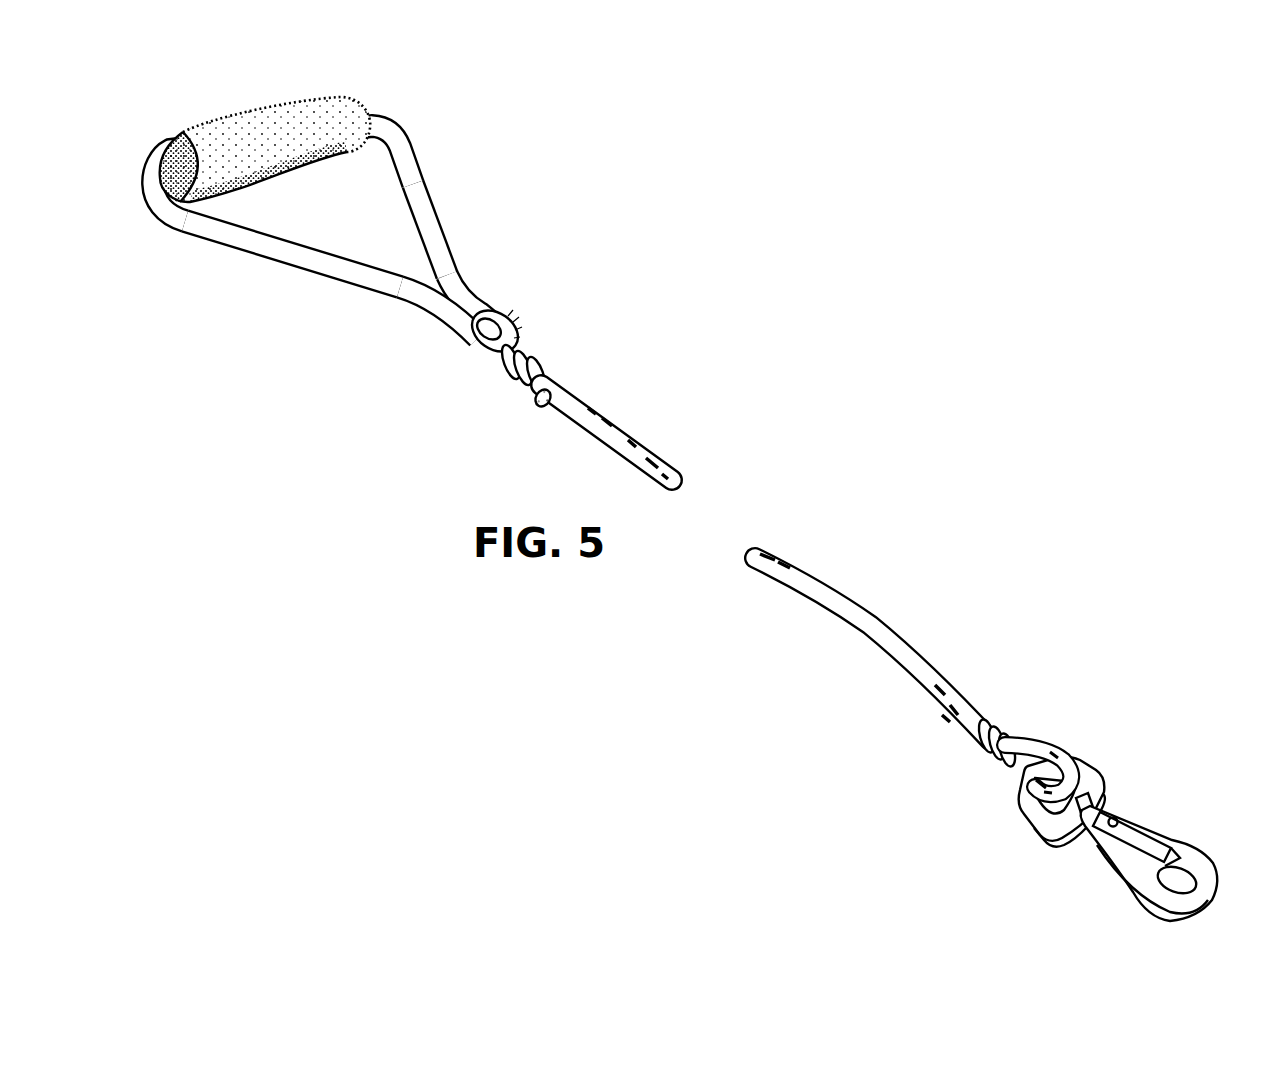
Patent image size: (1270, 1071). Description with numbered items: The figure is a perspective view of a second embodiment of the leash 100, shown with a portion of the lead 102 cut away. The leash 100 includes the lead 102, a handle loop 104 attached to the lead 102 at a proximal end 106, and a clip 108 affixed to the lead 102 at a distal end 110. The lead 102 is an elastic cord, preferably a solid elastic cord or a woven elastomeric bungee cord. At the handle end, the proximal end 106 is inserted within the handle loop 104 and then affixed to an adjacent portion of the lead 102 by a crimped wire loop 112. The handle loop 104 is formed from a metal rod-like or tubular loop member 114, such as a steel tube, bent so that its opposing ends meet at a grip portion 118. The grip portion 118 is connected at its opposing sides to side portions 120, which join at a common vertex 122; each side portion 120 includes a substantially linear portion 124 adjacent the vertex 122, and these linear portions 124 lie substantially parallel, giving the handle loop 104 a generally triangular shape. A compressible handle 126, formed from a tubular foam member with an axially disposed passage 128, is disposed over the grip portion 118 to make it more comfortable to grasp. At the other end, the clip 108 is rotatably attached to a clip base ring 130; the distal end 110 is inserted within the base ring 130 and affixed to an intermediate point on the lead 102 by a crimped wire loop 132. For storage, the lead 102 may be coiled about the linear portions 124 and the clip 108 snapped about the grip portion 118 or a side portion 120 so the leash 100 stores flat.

The leash 100 is at (675, 365).
The lead 102 is at (663, 463).
The handle loop 104 is at (326, 211).
The proximal end 106 is at (518, 343).
The clip 108 is at (1150, 827).
The distal end 110 is at (1010, 783).
The crimped wire loop 112 is at (507, 387).
The loop member 114 is at (410, 141).
The grip portion 118 is at (152, 160).
The side portions 120 is at (437, 210).
The vertex 122 is at (517, 313).
The linear portions 124 is at (472, 280).
The handle 126 is at (265, 122).
The passage 128 is at (178, 136).
The clip base ring 130 is at (1083, 760).
The crimped wire loop 132 is at (1003, 727).